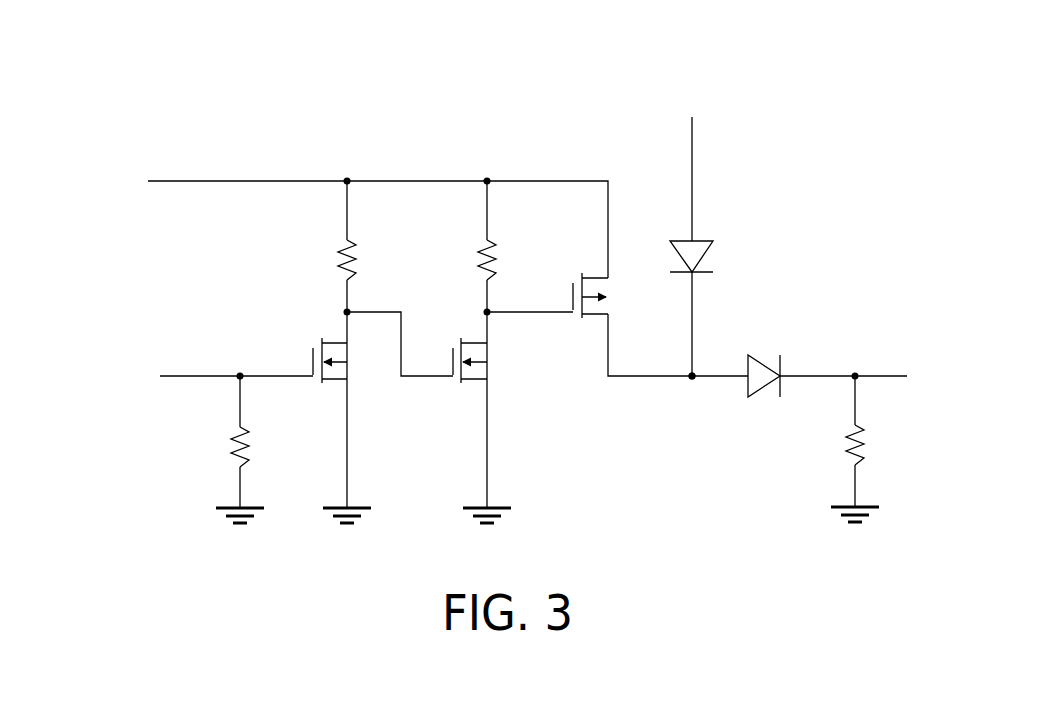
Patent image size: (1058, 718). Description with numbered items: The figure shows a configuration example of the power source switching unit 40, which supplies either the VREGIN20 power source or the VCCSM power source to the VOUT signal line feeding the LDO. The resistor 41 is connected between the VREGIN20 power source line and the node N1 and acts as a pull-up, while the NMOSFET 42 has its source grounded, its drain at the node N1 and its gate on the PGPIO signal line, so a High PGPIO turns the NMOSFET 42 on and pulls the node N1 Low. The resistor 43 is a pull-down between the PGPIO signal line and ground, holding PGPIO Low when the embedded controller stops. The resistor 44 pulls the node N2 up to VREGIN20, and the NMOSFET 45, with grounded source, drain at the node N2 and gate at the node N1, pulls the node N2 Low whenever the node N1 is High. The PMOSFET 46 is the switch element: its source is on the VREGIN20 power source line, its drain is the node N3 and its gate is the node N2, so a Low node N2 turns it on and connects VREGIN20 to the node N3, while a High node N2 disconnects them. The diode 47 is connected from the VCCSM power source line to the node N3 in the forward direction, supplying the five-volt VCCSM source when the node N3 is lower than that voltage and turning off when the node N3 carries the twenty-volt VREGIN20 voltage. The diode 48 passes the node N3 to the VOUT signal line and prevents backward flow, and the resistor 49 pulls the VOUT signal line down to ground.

The power source switching unit 40 is at (504, 99).
The resistor 41 is at (338, 255).
The NMOSFET 42 is at (311, 356).
The resistor 43 is at (232, 442).
The resistor 44 is at (478, 255).
The NMOSFET 45 is at (470, 383).
The PMOSFET 46 is at (572, 297).
The diode 47 is at (700, 237).
The diode 48 is at (762, 360).
The resistor 49 is at (848, 438).
The node N1 is at (352, 311).
The node N2 is at (491, 317).
The node N3 is at (690, 380).